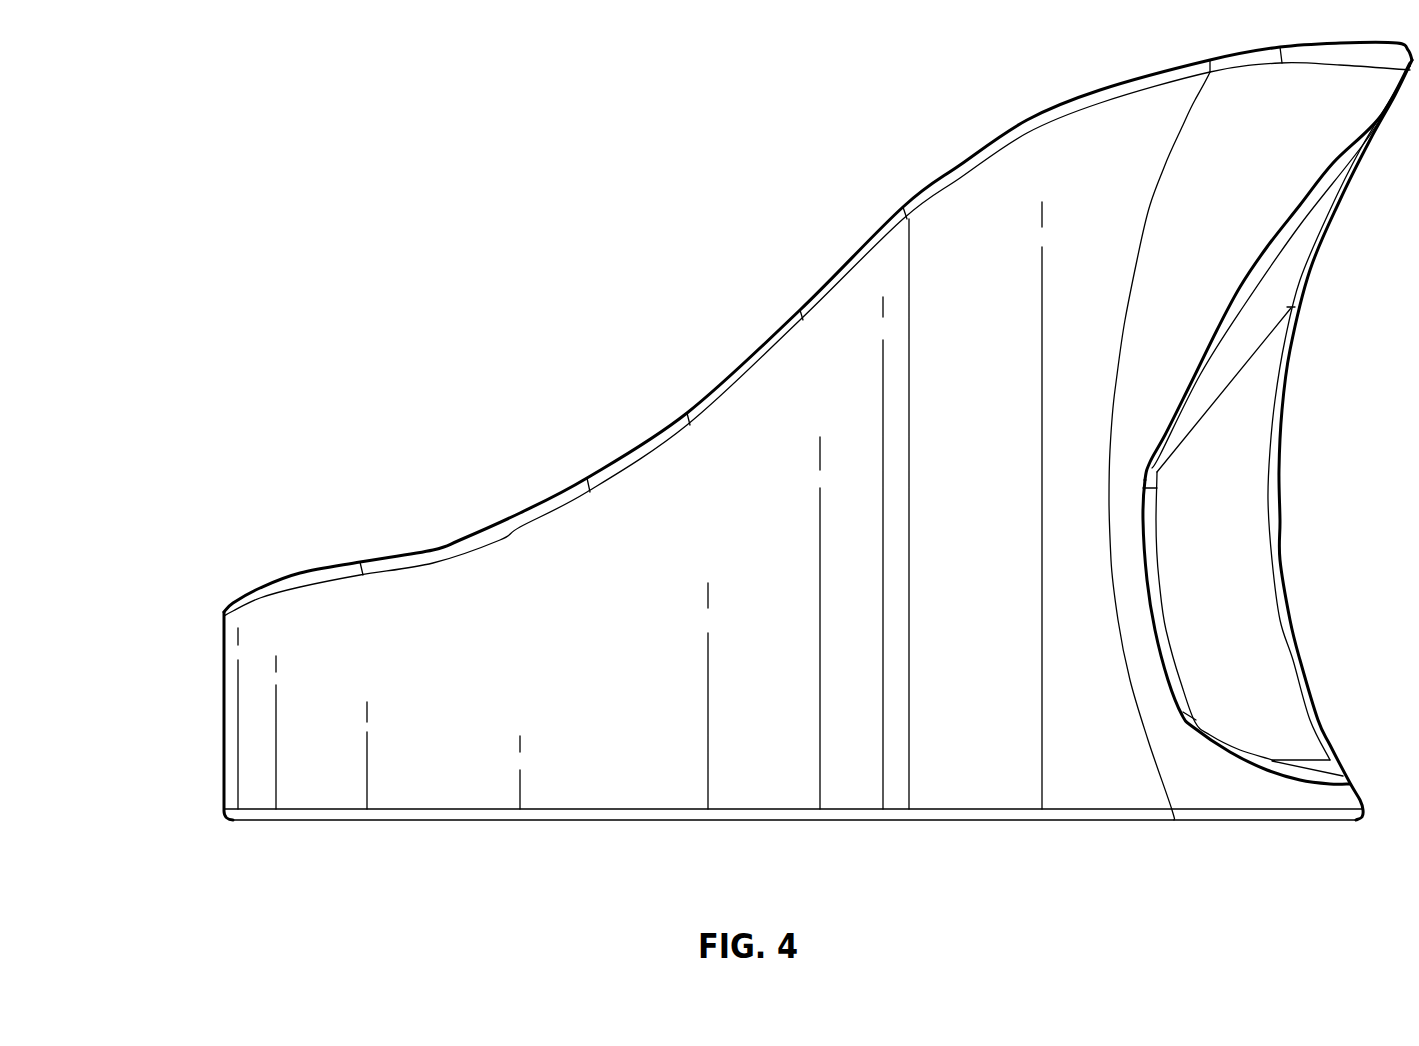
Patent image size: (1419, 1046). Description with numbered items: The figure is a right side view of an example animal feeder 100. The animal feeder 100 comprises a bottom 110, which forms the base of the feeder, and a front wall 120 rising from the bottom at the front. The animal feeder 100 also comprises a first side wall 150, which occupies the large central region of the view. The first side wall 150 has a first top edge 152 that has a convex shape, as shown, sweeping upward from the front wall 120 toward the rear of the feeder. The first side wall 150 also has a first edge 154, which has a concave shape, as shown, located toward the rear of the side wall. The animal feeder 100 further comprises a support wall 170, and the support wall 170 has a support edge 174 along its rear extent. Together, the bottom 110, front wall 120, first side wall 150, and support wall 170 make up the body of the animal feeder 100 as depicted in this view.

The animal feeder 100 is at (500, 226).
The bottom 110 is at (1280, 810).
The front wall 120 is at (224, 699).
The first side wall 150 is at (982, 687).
The first top edge 152 is at (1028, 120).
The first edge 154 is at (1158, 630).
The support wall 170 is at (1243, 508).
The support edge 174 is at (1283, 395).